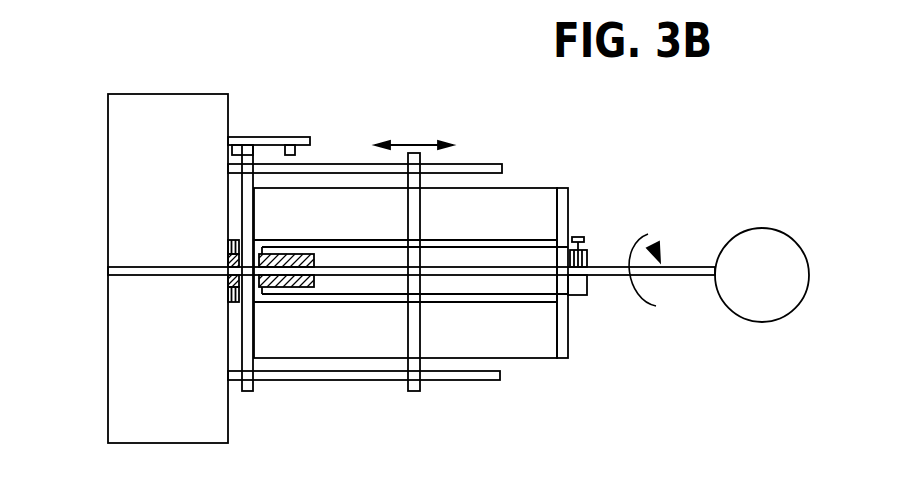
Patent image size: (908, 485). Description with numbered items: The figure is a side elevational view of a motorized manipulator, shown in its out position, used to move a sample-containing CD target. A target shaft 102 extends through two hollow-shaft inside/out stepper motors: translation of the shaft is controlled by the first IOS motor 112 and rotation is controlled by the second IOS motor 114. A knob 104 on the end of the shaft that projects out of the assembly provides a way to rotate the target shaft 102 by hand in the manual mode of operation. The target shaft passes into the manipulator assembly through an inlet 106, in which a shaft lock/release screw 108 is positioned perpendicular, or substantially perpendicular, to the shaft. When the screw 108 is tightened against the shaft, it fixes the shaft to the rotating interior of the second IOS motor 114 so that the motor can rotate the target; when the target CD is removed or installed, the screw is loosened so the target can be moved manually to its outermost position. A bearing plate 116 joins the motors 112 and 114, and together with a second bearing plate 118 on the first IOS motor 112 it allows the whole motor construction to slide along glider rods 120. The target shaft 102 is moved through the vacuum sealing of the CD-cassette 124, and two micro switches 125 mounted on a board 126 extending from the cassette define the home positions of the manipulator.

The target shaft 102 is at (688, 267).
The knob 104 is at (778, 232).
The inlet 106 is at (565, 188).
The shaft lock/release screw 108 is at (579, 237).
The first IOS motor 112 is at (372, 88).
The second IOS motor 114 is at (523, 188).
The bearing plate 116 is at (425, 172).
The second bearing plate 118 is at (253, 183).
The glider rods 120 is at (495, 165).
The CD-cassette 124 is at (118, 384).
The micro switches 125 is at (260, 138).
The board 126 is at (349, 188).